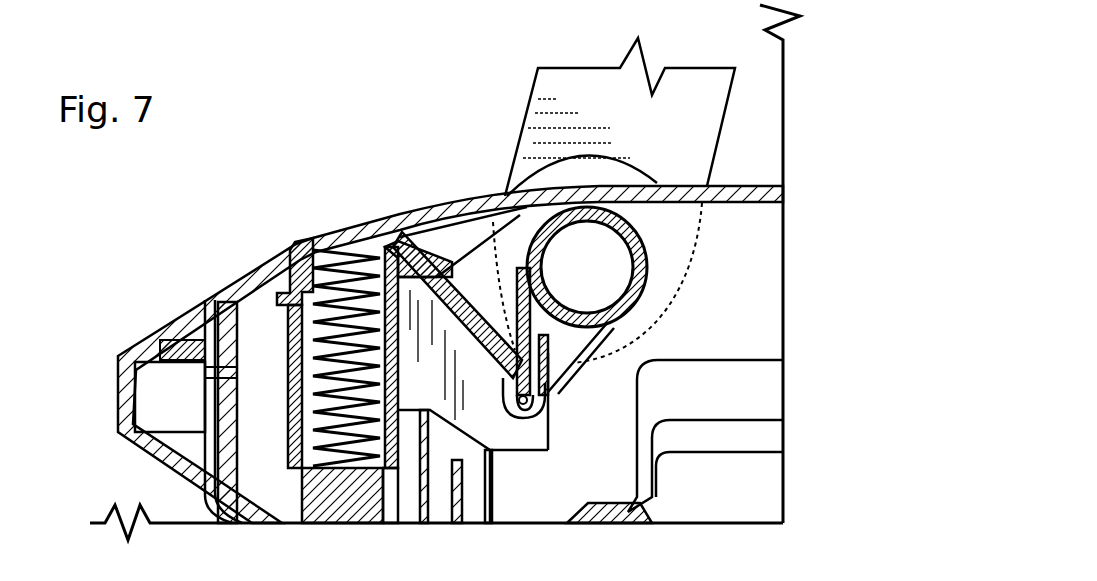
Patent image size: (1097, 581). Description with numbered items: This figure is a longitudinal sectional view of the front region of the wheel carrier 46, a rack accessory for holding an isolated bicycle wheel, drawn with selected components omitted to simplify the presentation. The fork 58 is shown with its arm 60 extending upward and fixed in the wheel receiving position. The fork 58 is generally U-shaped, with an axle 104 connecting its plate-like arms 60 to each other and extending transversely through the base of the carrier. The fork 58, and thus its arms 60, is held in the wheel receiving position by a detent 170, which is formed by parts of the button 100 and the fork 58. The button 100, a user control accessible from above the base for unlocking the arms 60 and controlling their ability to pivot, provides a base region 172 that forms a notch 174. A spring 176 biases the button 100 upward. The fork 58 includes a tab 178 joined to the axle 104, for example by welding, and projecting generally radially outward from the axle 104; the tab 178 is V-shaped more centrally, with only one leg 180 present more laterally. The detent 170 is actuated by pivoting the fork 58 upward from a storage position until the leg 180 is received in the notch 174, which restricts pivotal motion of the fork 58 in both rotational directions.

The wheel carrier 46 is at (240, 174).
The fork 58 is at (530, 82).
The arm 60 is at (520, 124).
The button 100 is at (306, 240).
The axle 104 is at (648, 266).
The detent 170 is at (508, 352).
The base region 172 is at (553, 415).
The notch 174 is at (533, 385).
The spring 176 is at (313, 395).
The tab 178 is at (508, 288).
The leg 180 is at (524, 402).